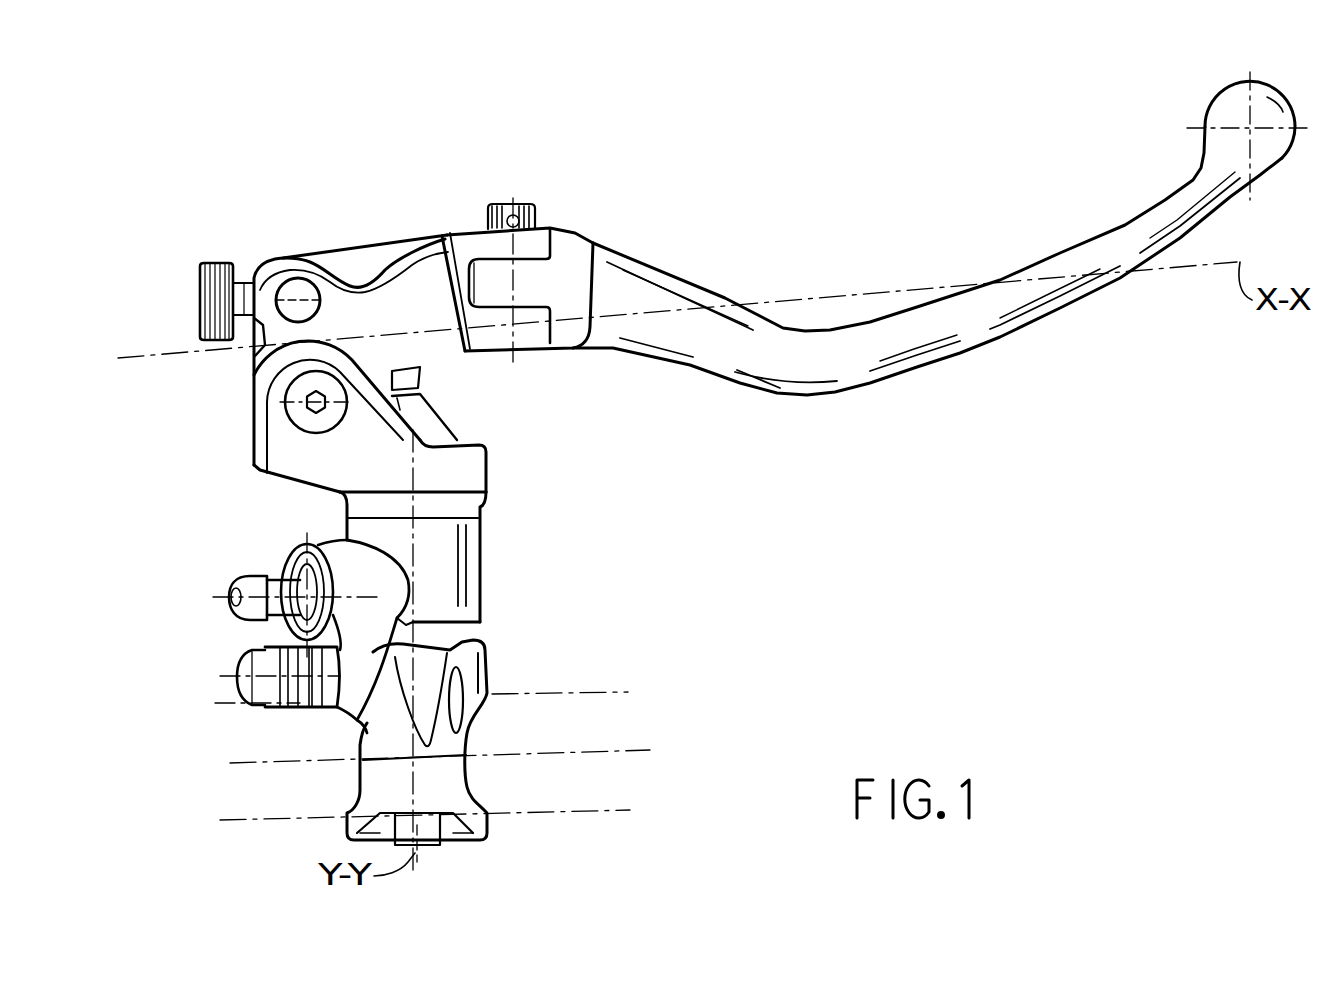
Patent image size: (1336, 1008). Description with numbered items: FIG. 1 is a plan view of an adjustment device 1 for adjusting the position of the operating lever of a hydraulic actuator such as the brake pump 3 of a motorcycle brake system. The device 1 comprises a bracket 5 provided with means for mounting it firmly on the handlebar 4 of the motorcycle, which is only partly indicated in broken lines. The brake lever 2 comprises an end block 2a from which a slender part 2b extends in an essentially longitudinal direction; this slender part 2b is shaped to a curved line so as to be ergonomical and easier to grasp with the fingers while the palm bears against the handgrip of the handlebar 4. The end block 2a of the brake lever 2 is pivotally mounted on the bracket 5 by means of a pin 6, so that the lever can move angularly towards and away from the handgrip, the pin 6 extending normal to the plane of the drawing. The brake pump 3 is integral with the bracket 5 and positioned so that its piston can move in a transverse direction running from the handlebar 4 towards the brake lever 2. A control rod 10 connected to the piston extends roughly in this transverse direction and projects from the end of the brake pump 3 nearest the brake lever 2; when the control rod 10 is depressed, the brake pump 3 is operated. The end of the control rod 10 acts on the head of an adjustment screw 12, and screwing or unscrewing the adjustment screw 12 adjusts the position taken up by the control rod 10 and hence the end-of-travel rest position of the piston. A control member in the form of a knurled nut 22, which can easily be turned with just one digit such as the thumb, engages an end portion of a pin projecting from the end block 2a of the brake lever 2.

The adjustment device 1 is at (478, 114).
The brake lever 2 is at (420, 234).
The end block 2a is at (355, 298).
The slender part 2b is at (680, 290).
The brake pump 3 is at (455, 608).
The handlebar 4 is at (567, 805).
The bracket 5 is at (493, 493).
The pin 6 is at (300, 413).
The control rod 10 is at (428, 398).
The adjustment screw 12 is at (427, 367).
The knurled nut 22 is at (200, 296).